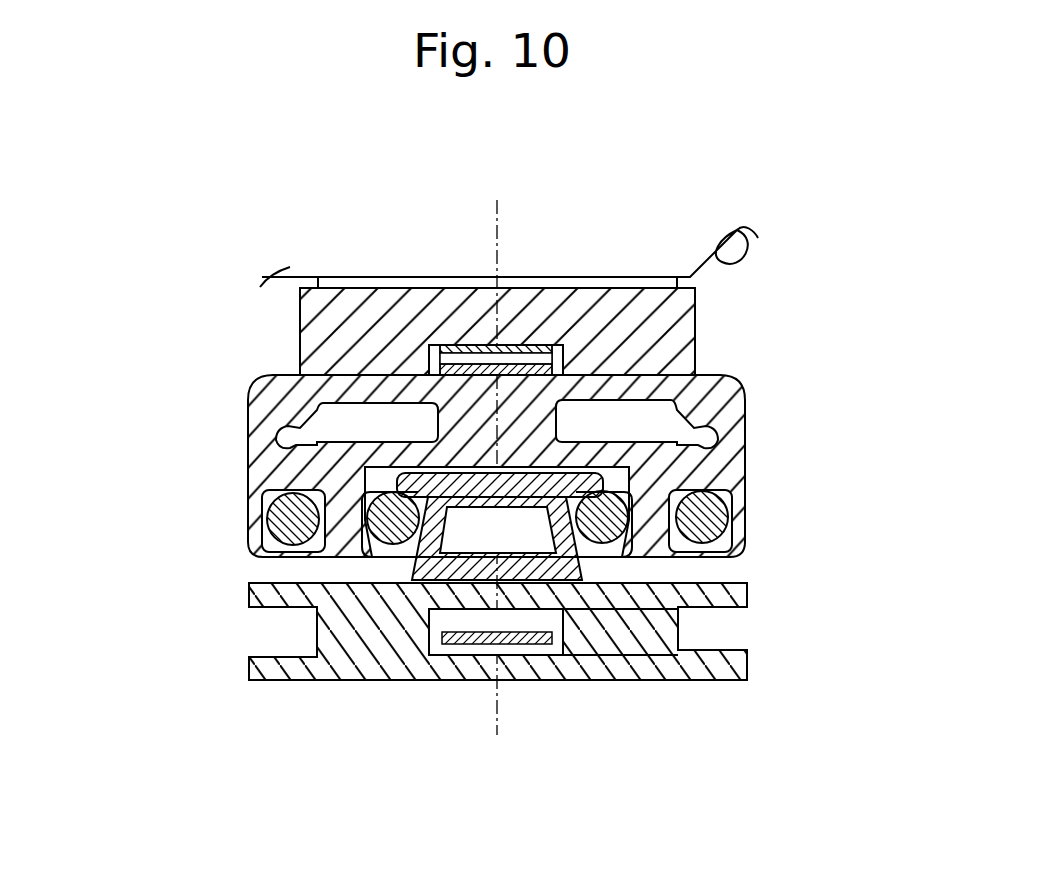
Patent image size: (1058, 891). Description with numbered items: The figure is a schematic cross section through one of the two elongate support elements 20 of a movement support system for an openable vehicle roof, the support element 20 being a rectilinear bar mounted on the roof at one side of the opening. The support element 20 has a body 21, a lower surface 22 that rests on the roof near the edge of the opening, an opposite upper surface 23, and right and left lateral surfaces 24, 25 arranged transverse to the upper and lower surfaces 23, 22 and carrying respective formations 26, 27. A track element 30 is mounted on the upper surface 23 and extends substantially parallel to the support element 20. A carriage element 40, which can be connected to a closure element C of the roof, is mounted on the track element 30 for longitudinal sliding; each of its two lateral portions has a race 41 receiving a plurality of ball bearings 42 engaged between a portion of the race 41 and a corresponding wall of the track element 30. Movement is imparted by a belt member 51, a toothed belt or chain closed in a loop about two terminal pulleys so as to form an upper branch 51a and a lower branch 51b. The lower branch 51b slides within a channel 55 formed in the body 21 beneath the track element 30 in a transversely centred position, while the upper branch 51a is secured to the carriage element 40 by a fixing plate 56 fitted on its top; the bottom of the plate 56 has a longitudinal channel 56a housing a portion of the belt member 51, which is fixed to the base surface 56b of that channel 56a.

The longitudinal channel 56a is at (441, 345).
The base surface 56b is at (466, 345).
The belt member 51 is at (427, 442).
The upper belt branch 51a is at (543, 350).
The lower belt branch 51b is at (517, 647).
The closure element C is at (733, 231).
The fixing plate 56 is at (697, 298).
The carriage element 40 is at (755, 408).
The ball bearings 42 is at (253, 445).
The race 41 is at (320, 545).
The upper surface 23 is at (273, 572).
The track element 30 is at (600, 574).
The support element 20 is at (498, 658).
The formation 27 is at (262, 655).
The formation 26 is at (690, 640).
The left lateral surface 25 is at (245, 668).
The right lateral surface 24 is at (748, 657).
The lower surface 22 is at (322, 683).
The body 21 is at (622, 652).
The channel 55 is at (463, 655).